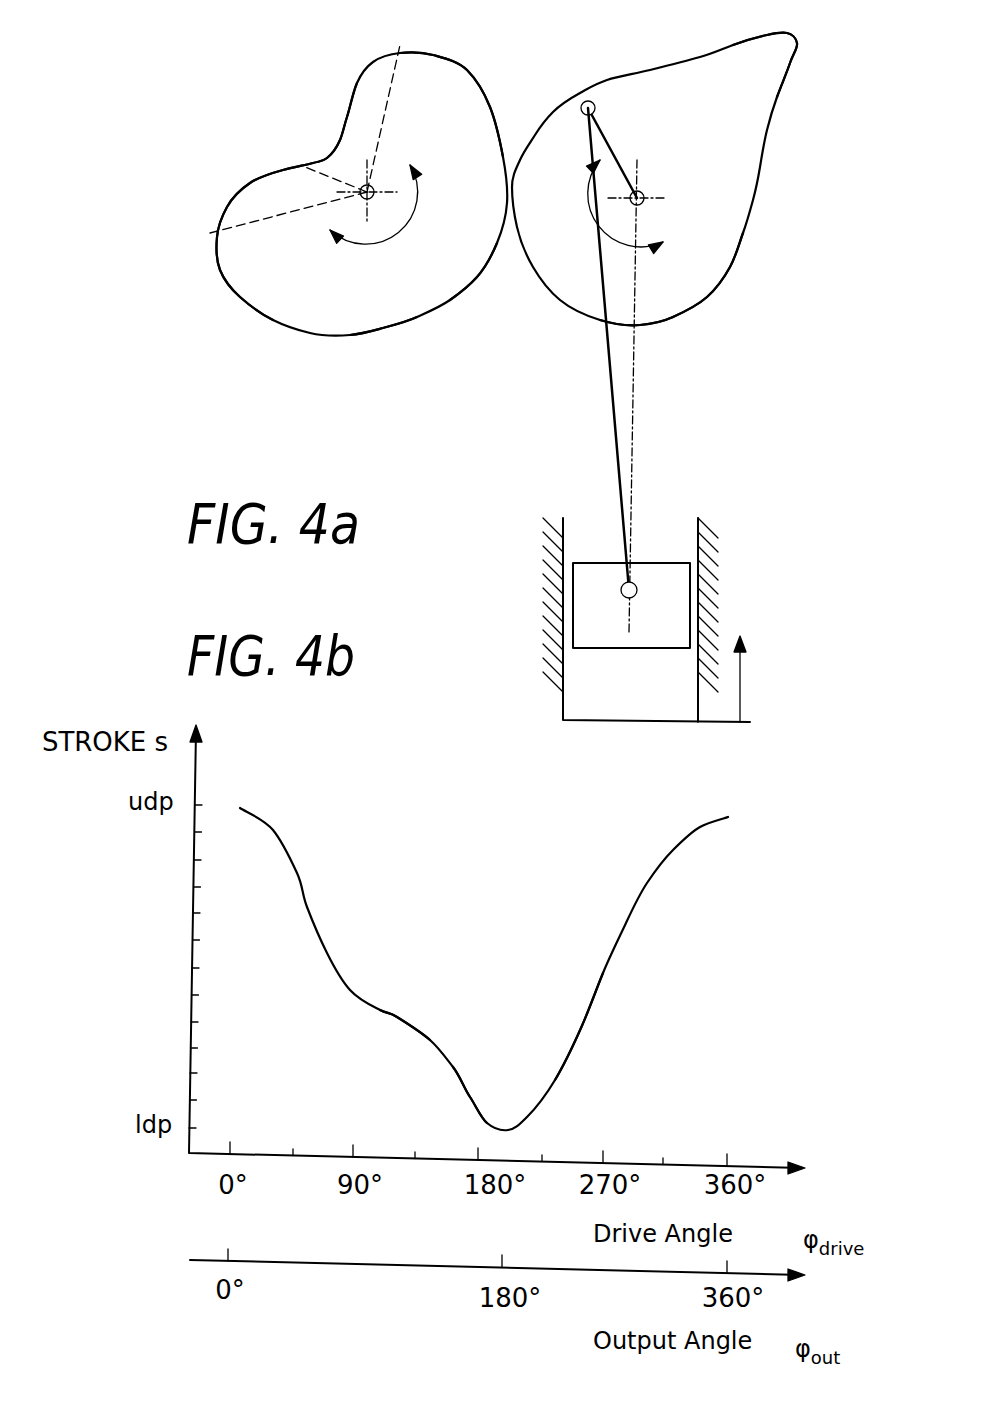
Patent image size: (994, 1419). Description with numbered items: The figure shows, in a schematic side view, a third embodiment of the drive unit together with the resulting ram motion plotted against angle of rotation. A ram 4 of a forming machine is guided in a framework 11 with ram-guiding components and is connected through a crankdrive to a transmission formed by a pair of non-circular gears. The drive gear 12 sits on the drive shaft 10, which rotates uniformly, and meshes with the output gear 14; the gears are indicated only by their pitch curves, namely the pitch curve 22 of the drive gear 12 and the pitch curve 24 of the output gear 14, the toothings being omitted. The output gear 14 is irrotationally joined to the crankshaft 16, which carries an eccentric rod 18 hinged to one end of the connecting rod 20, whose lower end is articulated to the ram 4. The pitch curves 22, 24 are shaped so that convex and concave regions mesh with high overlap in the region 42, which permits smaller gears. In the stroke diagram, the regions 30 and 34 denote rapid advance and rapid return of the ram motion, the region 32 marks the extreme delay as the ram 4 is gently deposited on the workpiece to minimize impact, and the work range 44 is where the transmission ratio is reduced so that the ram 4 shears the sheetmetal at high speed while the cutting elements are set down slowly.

In FIG. 4A, the ram 4 is at (585, 593).
In FIG. 4A, the drive shaft 10 is at (367, 192).
In FIG. 4A, the framework with ram-guiding components 11 is at (715, 573).
In FIG. 4A, the drive gear 12 is at (453, 283).
In FIG. 4A, the output gear 14 is at (667, 307).
In FIG. 4A, the crankshaft 16 is at (640, 193).
In FIG. 4A, the eccentric rod 18 is at (607, 130).
In FIG. 4A, the connecting rod 20 is at (610, 368).
In FIG. 4A, the pitch curve of the drive gear 22 is at (257, 307).
In FIG. 4A, the pitch curve of the output gear 24 is at (717, 287).
In FIG. 4A, the region of rapid advance 30 is at (453, 85).
In FIG. 4B, the region of rapid advance 30 is at (303, 895).
In FIG. 4A, the extreme delay when depositing the ram 32 is at (315, 163).
In FIG. 4B, the extreme delay when depositing the ram 32 is at (400, 1017).
In FIG. 4A, the region of rapid return 34 is at (393, 313).
In FIG. 4B, the region of rapid return 34 is at (583, 1023).
In FIG. 4A, the region of high overlap 42 is at (337, 147).
In FIG. 4A, the work range (work stroke) 44 is at (237, 212).
In FIG. 4B, the work range (work stroke) 44 is at (462, 1087).